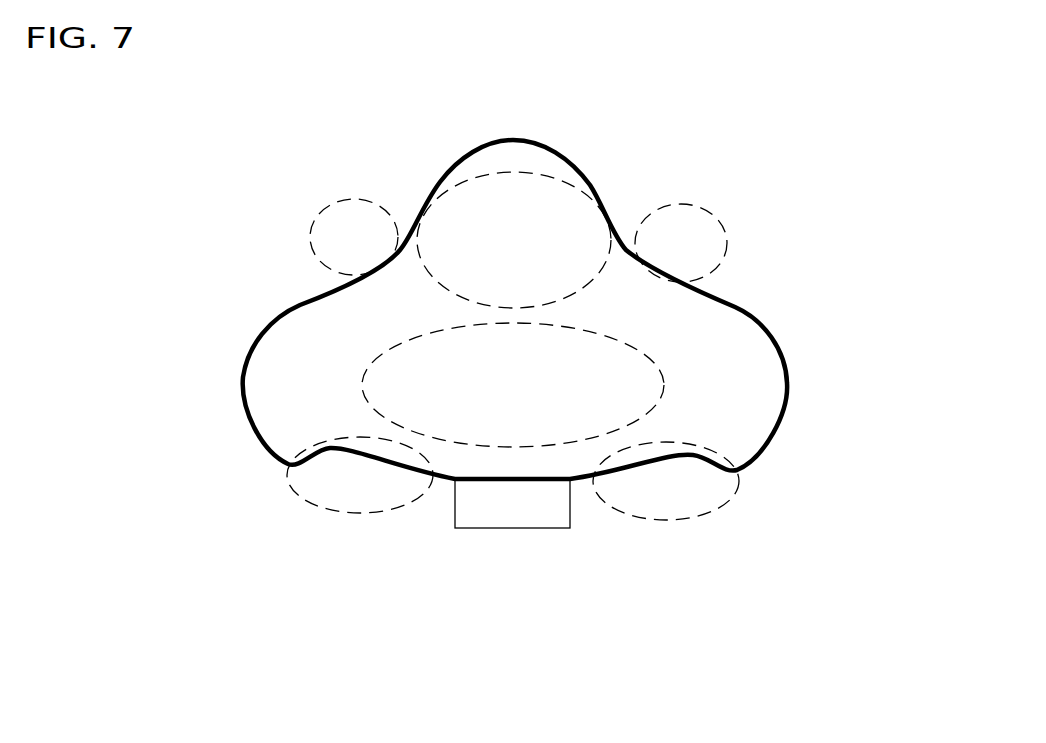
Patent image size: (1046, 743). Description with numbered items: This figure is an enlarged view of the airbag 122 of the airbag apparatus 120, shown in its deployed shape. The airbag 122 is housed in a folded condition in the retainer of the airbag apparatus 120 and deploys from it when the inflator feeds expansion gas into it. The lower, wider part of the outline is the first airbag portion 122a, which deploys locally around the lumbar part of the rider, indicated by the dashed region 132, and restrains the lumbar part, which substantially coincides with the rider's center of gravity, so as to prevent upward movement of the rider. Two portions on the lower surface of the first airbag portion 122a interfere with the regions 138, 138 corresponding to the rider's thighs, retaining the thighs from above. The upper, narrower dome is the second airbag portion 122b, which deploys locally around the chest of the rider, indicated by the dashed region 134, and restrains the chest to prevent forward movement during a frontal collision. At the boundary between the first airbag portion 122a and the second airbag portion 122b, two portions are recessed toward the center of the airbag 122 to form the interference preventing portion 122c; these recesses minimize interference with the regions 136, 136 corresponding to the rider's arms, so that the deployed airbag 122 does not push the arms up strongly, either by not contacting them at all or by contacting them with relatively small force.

The airbag apparatus 120 is at (478, 529).
The airbag 122 is at (441, 167).
The first airbag portion 122a is at (288, 397).
The second airbag portion 122b is at (528, 155).
The interference preventing portion 122c is at (406, 260).
The region corresponding to the lumbar part of the rider 132 is at (628, 388).
The region corresponding to the chest of the rider 134 is at (550, 208).
The regions corresponding to the arms of the rider 136 is at (311, 245).
The regions corresponding to the thighs of the rider 138 is at (352, 495).